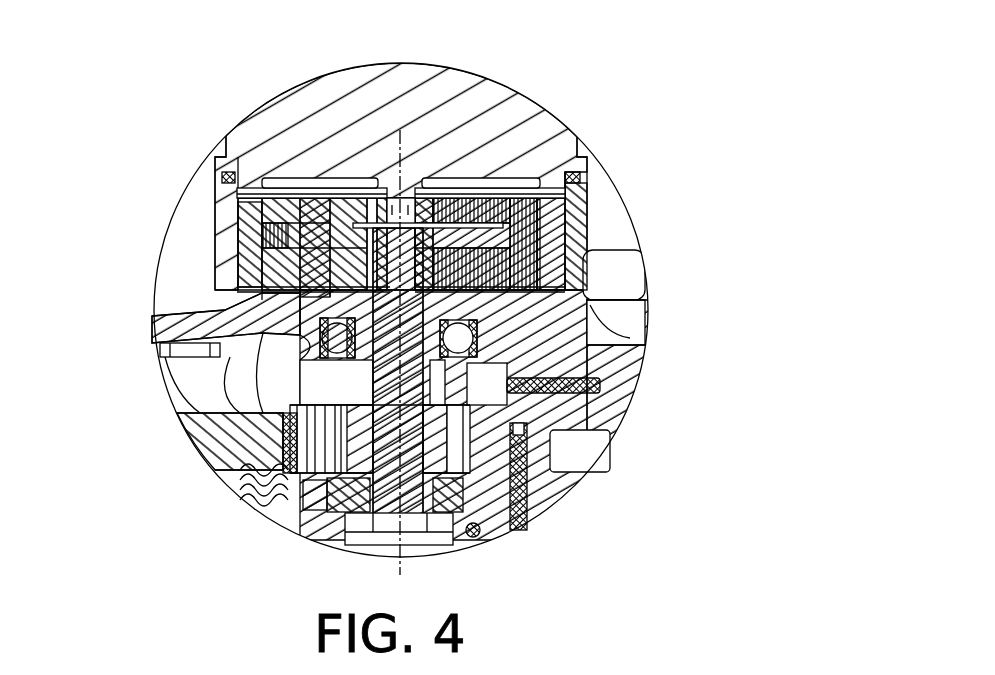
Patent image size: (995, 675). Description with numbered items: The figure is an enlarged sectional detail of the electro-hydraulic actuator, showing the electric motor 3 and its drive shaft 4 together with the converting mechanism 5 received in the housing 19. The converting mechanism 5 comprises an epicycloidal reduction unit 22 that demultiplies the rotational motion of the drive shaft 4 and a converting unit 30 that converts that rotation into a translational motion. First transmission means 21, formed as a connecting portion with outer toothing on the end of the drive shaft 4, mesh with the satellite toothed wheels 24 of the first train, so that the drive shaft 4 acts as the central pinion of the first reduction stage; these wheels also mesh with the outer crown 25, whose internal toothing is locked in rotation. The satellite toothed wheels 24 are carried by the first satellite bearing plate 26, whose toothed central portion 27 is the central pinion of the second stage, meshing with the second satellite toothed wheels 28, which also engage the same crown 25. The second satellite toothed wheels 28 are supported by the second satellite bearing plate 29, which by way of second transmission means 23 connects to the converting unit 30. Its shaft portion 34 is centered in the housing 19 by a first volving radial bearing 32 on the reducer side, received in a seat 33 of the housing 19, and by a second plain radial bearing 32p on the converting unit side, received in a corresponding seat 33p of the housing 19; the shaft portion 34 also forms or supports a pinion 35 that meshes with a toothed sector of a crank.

The electric motor 3 is at (500, 121).
The drive shaft 4 is at (388, 193).
The converting mechanism 5 is at (621, 156).
The housing 19 is at (225, 300).
The first transmission means 21 is at (403, 193).
The reduction unit 22 is at (572, 249).
The second transmission means 23 is at (475, 535).
The satellite toothed wheels 24 is at (280, 195).
The outer crown 25 is at (574, 246).
The first satellite bearing plate 26 is at (497, 332).
The toothed central portion 27 is at (595, 328).
The second satellite toothed wheels 28 is at (330, 328).
The second satellite bearing plate 29 is at (262, 300).
The converting unit 30 is at (181, 452).
The first volving radial bearing 32 is at (620, 383).
The second plain radial bearing 32p is at (363, 501).
The seat 33 is at (480, 345).
The seat 33p is at (437, 494).
The shaft portion 34 is at (560, 410).
The pinion 35 is at (530, 441).